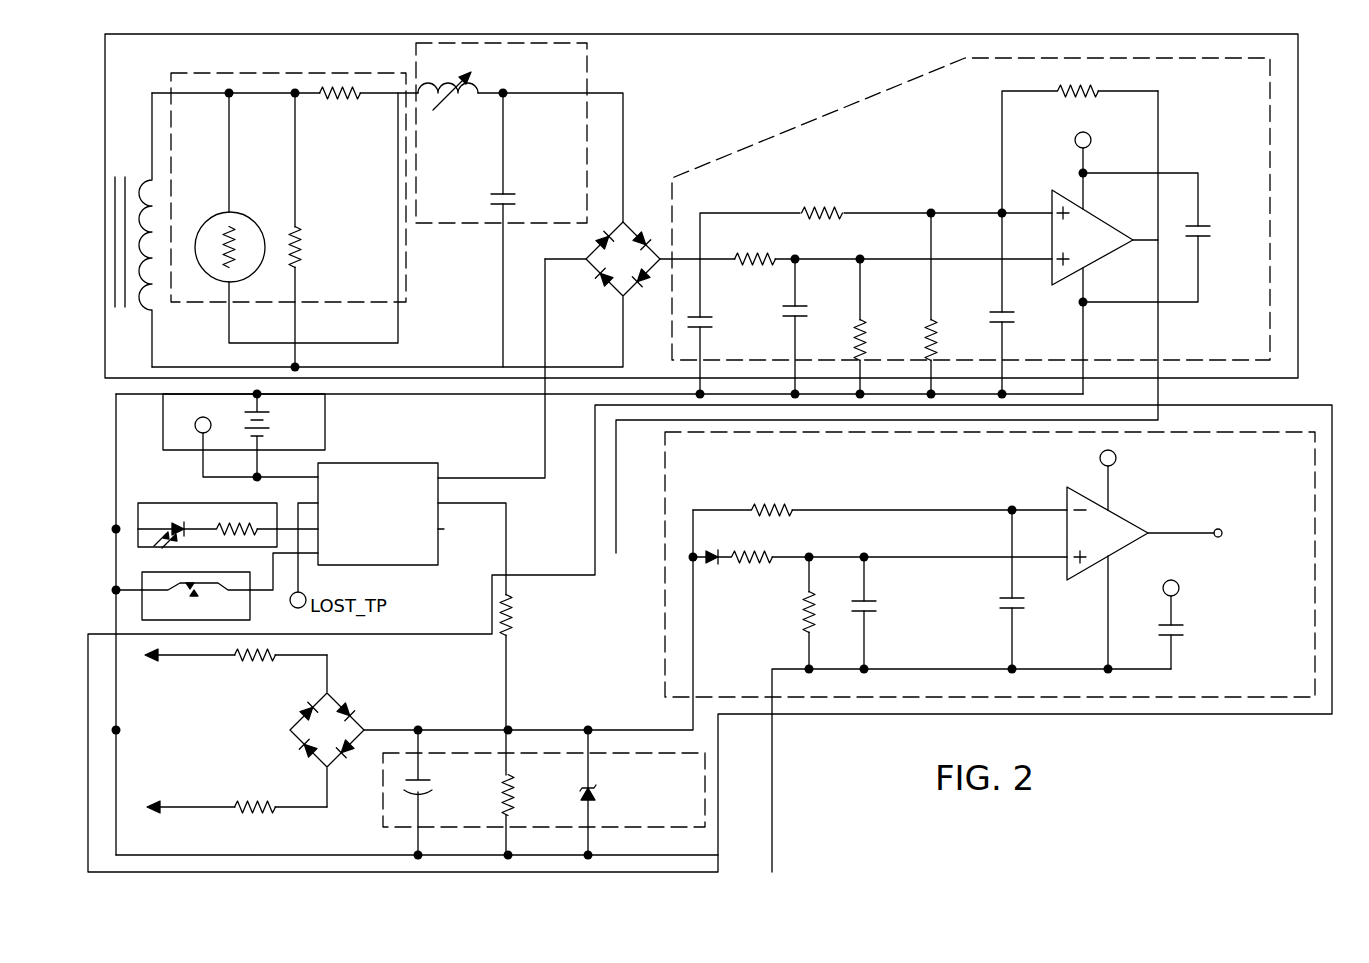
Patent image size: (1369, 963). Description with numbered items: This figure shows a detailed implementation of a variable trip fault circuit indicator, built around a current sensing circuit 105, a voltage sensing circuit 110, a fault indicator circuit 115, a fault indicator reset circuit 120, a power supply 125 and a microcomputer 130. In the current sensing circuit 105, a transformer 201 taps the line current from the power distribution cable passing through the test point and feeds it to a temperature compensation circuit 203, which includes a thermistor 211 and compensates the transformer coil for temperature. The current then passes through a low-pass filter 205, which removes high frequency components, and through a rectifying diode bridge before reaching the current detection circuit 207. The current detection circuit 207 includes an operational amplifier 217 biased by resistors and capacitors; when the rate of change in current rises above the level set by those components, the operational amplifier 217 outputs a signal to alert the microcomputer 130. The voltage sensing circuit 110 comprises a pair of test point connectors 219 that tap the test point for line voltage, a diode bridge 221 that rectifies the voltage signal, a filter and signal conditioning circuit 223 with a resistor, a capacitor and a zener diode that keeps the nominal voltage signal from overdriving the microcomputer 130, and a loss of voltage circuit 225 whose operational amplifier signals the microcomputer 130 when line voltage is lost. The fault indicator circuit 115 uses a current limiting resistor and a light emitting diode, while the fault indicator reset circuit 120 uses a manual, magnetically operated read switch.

The current sensing circuit 105 is at (1292, 38).
The voltage sensing circuit 110 is at (720, 874).
The fault indicator circuit 115 is at (162, 503).
The fault indicator reset circuit 120 is at (116, 588).
The power supply 125 is at (326, 406).
The microcomputer 130 is at (402, 463).
The transformer 201 is at (153, 326).
The temperature compensation circuit 203 is at (411, 248).
The low-pass filter 205 is at (588, 52).
The current detection circuit 207 is at (755, 146).
The thermistor 211 is at (238, 213).
The operational amplifier 217 is at (1128, 228).
The test point connectors 219 is at (157, 688).
The diode bridge 221 is at (347, 731).
The filter and signal conditioning circuit 223 is at (706, 768).
The loss of voltage circuit 225 is at (665, 632).